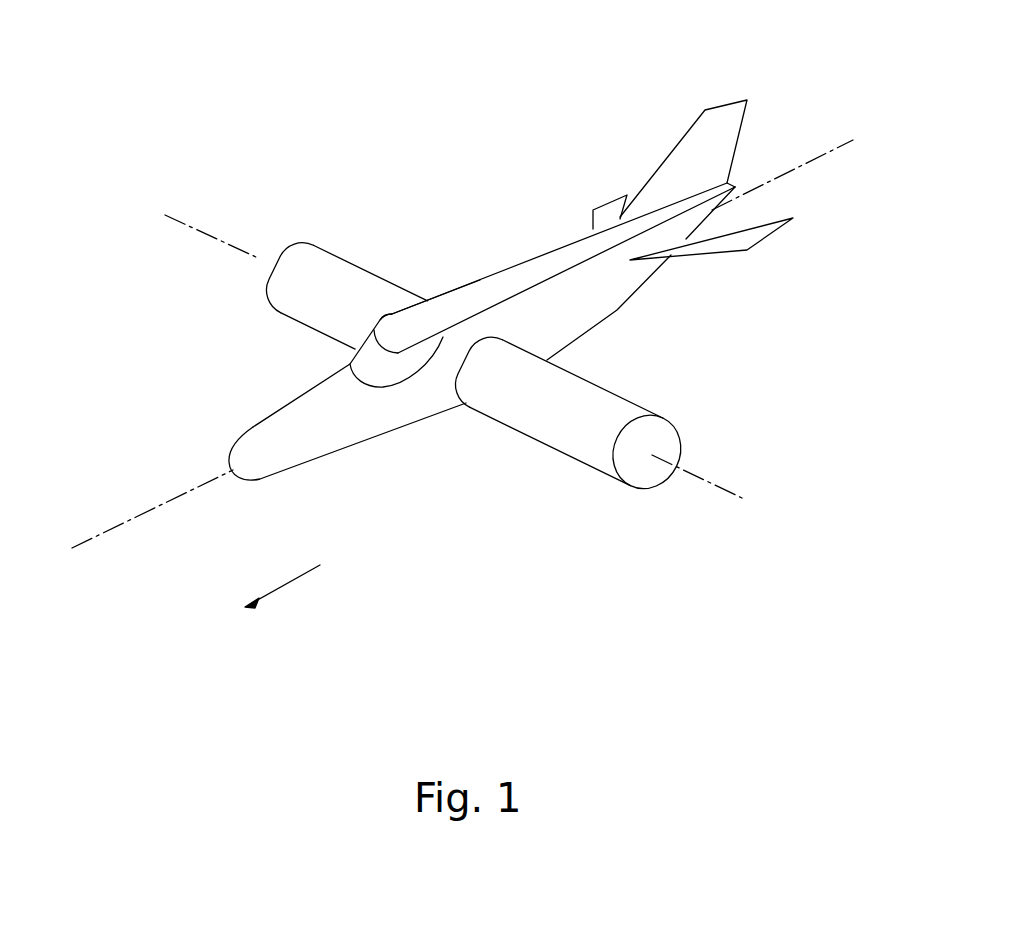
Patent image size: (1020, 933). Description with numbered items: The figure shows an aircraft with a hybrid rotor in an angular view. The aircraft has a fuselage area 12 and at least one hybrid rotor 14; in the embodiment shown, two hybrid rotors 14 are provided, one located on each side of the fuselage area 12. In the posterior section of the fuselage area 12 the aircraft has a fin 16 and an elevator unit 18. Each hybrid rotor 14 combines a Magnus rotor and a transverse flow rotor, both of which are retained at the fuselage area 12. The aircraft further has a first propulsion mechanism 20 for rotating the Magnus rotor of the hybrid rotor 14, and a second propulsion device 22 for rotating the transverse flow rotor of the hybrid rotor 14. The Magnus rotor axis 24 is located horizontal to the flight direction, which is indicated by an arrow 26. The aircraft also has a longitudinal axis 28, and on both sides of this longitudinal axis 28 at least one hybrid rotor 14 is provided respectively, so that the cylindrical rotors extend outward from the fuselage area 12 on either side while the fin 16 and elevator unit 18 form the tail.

The fuselage area 12 is at (292, 442).
The hybrid rotor 14 is at (340, 232).
The fin 16 is at (722, 124).
The elevator unit 18 is at (738, 238).
The first propulsion mechanism 20 is at (440, 373).
The second propulsion device 22 is at (473, 333).
The Magnus rotor axis 24 is at (728, 486).
The arrow 26 is at (280, 588).
The longitudinal axis 28 is at (138, 515).